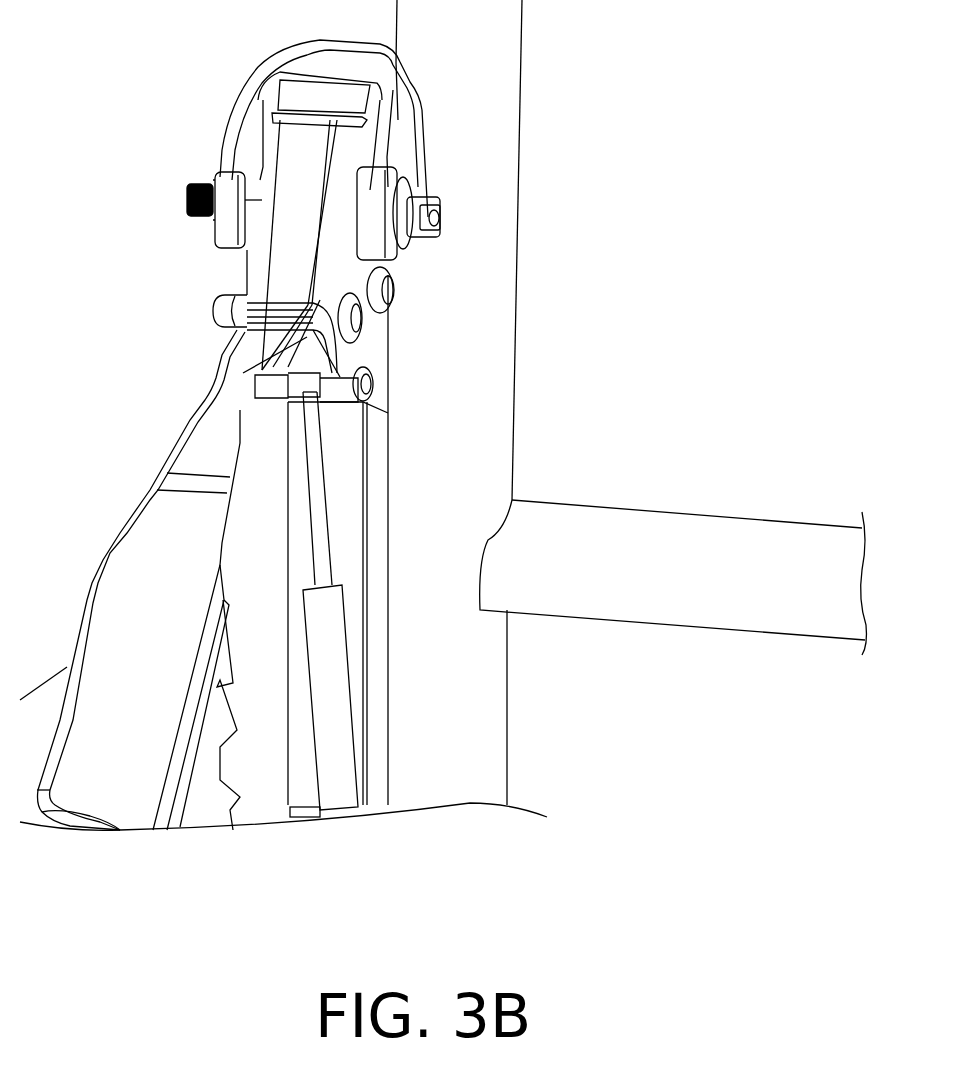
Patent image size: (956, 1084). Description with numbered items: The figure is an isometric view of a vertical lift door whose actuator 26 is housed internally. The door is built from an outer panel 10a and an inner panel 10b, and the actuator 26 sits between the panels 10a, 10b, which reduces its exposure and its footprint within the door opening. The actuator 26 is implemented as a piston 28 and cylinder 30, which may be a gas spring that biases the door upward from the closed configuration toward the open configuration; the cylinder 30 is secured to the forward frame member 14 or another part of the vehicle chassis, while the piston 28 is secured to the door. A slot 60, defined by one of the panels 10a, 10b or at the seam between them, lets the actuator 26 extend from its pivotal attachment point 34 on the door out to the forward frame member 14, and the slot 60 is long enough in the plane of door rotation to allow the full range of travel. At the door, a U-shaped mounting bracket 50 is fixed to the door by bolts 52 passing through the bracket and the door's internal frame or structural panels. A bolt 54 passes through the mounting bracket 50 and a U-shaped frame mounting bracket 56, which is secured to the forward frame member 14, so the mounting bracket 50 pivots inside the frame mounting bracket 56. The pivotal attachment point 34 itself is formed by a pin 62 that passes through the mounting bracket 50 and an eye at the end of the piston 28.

The outer panel 10a is at (247, 503).
The inner panel 10b is at (382, 600).
The forward frame member 14 is at (493, 290).
The actuator 26 is at (346, 621).
The piston 28 is at (320, 530).
The cylinder 30 is at (332, 732).
The second pivotal attachment point 34 is at (377, 380).
The mounting bracket 50 is at (283, 236).
The bolts 52 is at (362, 327).
The bolt 54 is at (188, 186).
The frame mounting bracket 56 is at (388, 157).
The slot 60 is at (363, 453).
The pin 62 is at (277, 388).